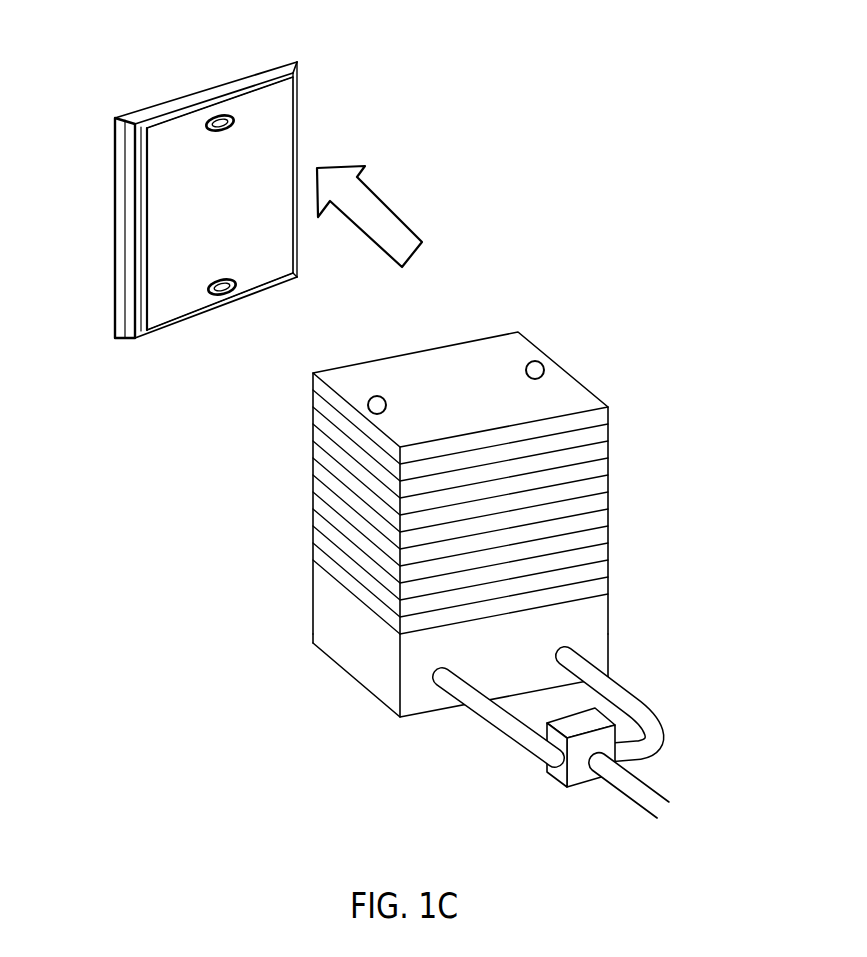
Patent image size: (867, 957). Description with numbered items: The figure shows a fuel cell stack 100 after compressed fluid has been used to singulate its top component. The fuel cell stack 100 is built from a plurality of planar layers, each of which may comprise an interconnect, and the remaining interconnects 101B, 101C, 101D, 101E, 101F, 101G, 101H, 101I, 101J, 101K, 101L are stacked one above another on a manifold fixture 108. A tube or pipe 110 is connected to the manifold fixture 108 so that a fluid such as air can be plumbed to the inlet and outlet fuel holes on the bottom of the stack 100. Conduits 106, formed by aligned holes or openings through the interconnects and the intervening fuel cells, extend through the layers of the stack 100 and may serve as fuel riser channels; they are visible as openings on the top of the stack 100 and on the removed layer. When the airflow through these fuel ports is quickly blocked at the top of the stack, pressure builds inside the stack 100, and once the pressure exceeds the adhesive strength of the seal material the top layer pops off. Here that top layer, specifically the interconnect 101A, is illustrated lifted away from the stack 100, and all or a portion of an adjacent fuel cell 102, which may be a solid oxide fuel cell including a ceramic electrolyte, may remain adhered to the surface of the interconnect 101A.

The fuel cell stack 100 is at (357, 483).
The interconnect 101A is at (127, 293).
The interconnect 101B is at (313, 380).
The interconnect 101C is at (313, 400).
The interconnect 101D is at (313, 419).
The interconnect 101E is at (313, 435).
The interconnect 101F is at (313, 450).
The interconnect 101G is at (313, 466).
The interconnect 101H is at (313, 479).
The interconnect 101I is at (313, 498).
The interconnect 101J is at (313, 516).
The interconnect 101K is at (313, 534).
The interconnect 101L is at (418, 589).
The fuel cell 102 is at (276, 102).
The conduit 106 is at (215, 115).
The manifold fixture 108 is at (337, 631).
The tube or pipe 110 is at (627, 690).